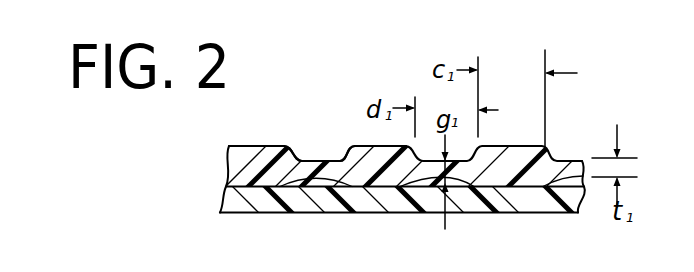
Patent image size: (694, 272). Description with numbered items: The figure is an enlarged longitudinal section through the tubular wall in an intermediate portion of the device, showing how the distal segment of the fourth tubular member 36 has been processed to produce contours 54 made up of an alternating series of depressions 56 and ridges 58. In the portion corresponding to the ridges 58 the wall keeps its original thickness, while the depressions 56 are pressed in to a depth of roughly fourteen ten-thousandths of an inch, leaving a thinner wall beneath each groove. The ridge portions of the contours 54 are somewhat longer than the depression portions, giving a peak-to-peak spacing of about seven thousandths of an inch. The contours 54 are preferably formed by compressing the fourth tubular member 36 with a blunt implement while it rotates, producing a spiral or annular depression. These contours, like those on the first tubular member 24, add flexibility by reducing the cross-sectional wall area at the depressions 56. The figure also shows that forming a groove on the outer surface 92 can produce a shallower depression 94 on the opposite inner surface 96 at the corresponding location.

The first tubular member 24 is at (262, 202).
The fourth tubular member 36 is at (258, 142).
The contours 54 is at (330, 114).
The depressions 56 is at (305, 160).
The ridges 58 is at (357, 145).
The outer surface 92 is at (240, 142).
The depression on inner surface 94 is at (318, 182).
The inner surface 96 is at (333, 188).